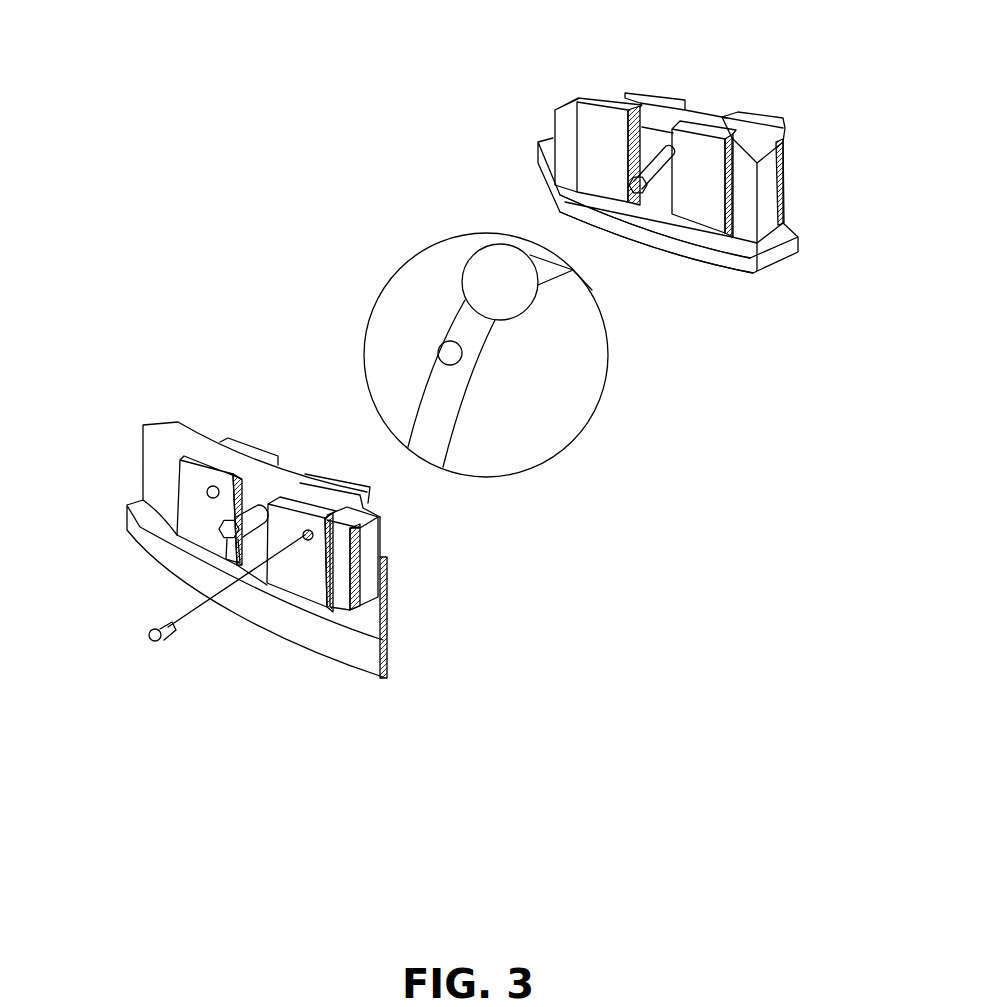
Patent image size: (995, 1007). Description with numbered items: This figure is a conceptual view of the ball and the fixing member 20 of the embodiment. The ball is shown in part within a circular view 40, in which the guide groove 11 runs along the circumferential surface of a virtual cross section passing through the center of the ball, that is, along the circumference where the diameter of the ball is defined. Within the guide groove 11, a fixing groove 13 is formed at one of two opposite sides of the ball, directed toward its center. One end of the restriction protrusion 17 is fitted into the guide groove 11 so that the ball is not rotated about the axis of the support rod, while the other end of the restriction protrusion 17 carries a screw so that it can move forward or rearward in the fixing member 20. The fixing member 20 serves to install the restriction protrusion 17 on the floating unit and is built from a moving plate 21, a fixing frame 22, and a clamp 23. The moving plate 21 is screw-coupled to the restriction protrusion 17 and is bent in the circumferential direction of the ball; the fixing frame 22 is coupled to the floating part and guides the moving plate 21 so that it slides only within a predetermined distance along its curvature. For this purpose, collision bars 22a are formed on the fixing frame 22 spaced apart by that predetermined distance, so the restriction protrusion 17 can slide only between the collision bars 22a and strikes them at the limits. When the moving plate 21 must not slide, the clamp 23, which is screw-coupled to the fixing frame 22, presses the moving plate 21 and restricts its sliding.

The guide groove 11 is at (430, 412).
The fixing groove 13 is at (440, 340).
The restriction protrusion 17 is at (640, 203).
The fixing member 20 is at (817, 238).
The moving plate 21 is at (770, 177).
The fixing frame 22 is at (738, 263).
The collision bar 22a is at (598, 140).
The clamp 23 is at (163, 645).
The wheel 40 is at (503, 377).